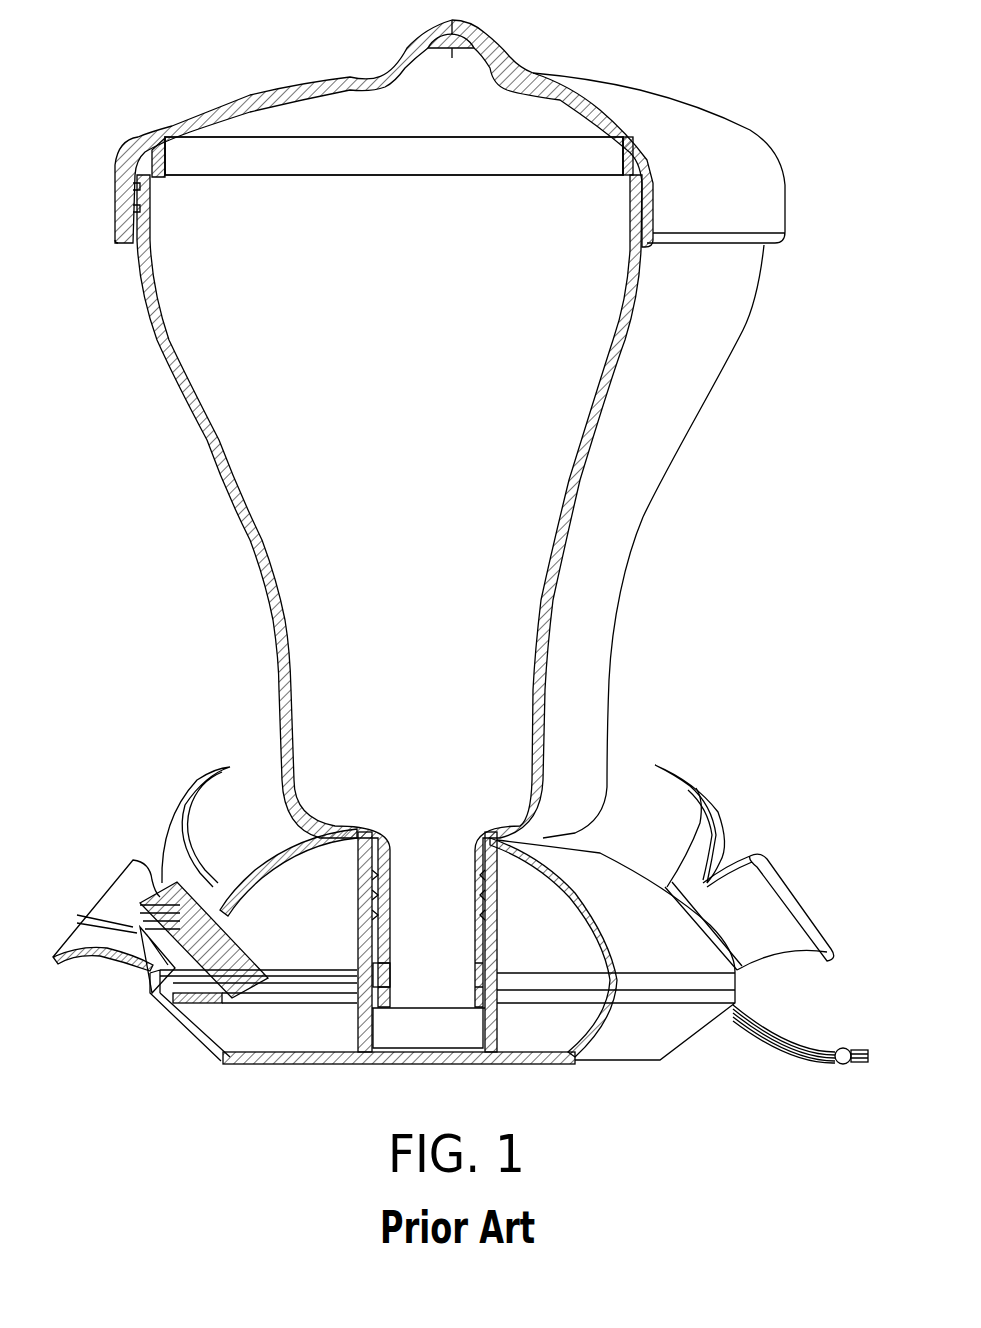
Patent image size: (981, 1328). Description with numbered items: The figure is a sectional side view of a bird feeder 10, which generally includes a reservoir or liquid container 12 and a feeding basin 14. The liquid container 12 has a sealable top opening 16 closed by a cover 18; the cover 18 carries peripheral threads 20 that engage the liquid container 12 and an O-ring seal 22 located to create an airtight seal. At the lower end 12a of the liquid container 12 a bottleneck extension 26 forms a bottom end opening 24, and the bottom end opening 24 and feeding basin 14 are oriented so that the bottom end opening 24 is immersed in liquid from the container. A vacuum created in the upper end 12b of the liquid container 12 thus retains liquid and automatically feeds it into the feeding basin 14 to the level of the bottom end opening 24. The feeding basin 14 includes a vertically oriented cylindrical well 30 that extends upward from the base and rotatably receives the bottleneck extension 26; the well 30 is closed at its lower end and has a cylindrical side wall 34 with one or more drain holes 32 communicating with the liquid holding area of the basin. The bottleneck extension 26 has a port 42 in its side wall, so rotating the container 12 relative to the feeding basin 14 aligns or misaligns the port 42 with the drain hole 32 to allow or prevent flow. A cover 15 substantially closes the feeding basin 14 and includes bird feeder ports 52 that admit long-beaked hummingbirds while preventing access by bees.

The bird feeder 10 is at (175, 488).
The liquid container 12 is at (152, 328).
The lower end of liquid container 12a is at (610, 677).
The upper end of liquid container 12b is at (742, 330).
The feeding basin 14 is at (178, 1025).
The cover 15 is at (623, 876).
The sealable top opening 16 is at (285, 152).
The cover 18 is at (360, 82).
The peripheral threads 20 is at (122, 212).
The O-ring seal 22 is at (152, 160).
The bottom end opening 24 is at (458, 1013).
The bottleneck extension 26 is at (433, 860).
The cylindrical well 30 is at (347, 893).
The drain hole 32 is at (490, 993).
The cylindrical side wall 34 is at (358, 933).
The port 42 is at (387, 975).
The bird feeder ports 52 is at (117, 892).